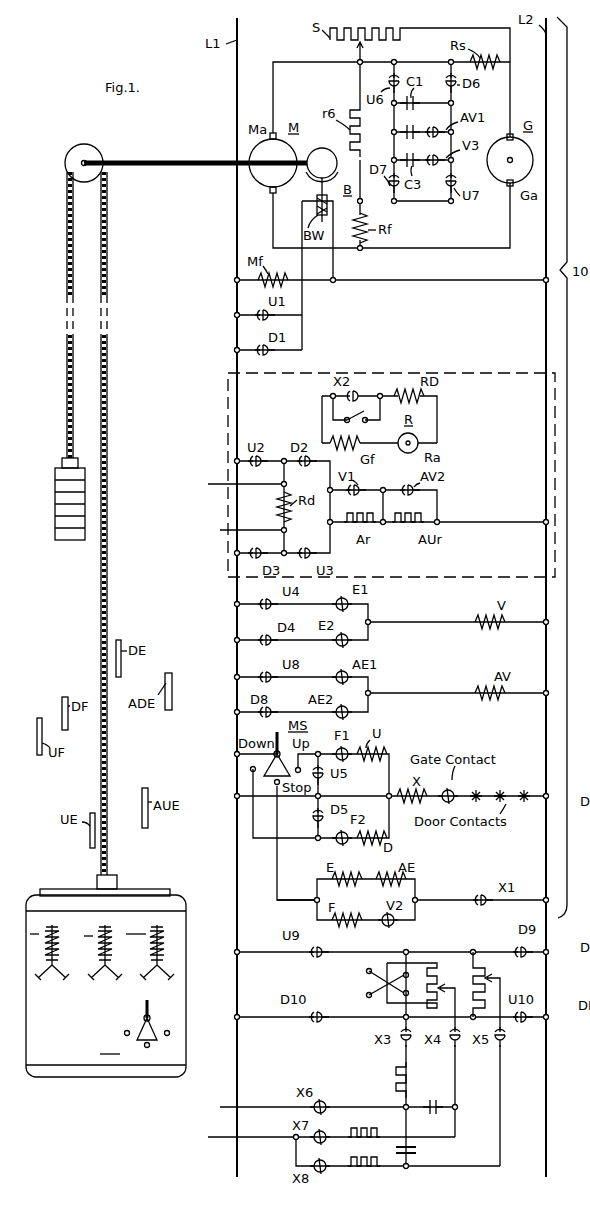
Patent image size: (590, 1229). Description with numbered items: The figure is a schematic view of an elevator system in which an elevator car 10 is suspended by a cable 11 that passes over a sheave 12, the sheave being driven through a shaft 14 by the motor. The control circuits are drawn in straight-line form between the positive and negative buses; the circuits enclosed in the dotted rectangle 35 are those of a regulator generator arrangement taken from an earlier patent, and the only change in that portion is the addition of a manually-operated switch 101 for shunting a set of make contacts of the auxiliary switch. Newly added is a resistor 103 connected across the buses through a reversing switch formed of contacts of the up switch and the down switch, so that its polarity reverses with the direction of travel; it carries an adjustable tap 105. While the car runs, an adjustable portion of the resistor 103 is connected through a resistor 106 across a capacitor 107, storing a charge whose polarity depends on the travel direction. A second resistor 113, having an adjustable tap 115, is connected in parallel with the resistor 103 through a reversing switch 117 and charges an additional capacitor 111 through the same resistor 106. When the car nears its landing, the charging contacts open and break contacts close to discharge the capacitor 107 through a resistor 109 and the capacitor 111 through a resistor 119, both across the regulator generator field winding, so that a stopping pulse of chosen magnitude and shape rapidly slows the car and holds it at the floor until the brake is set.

The elevator car 10 is at (82, 890).
The cable 11 is at (66, 215).
The sheave 12 is at (72, 162).
The shaft 14 is at (188, 160).
The dotted rectangle 35 is at (474, 376).
The manually-operated switch 101 is at (352, 418).
The resistor 103 is at (480, 962).
The adjustable tap 105 is at (490, 976).
The resistor 106 is at (396, 1075).
The capacitor 107 is at (418, 1151).
The resistor 109 is at (366, 1170).
The capacitor 111 is at (440, 1092).
The resistor 113 is at (436, 960).
The adjustable tap 115 is at (440, 986).
The reversing switch 117 is at (372, 984).
The resistor 119 is at (366, 1126).